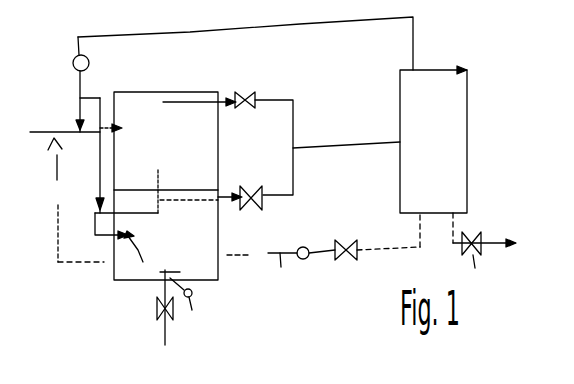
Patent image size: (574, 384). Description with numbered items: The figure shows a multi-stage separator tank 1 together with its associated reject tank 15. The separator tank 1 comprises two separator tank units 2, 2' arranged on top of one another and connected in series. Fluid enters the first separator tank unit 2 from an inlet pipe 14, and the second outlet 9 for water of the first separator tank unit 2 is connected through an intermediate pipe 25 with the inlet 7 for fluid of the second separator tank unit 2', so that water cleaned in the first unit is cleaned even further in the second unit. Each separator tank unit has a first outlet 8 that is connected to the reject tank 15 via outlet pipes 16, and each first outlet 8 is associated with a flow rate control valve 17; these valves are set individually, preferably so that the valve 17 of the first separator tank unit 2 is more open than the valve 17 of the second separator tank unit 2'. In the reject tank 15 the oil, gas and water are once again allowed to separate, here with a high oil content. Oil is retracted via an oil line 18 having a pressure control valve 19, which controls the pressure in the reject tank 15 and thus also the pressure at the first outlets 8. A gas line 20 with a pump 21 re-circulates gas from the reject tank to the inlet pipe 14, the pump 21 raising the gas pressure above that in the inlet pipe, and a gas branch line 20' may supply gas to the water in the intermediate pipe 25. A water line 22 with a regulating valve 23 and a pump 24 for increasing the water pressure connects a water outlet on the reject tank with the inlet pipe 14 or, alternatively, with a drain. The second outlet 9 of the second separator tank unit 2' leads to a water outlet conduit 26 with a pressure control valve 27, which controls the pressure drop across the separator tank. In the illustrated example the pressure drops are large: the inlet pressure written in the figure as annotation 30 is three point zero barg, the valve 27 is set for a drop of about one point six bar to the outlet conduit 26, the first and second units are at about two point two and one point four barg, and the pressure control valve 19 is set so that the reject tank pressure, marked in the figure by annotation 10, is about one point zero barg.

The separator tank 1 is at (113, 302).
The separator tank unit 2 is at (253, 147).
The separator tank unit 2' is at (227, 296).
The inlet for fluid 7 is at (118, 128).
The first outlet 8 is at (173, 102).
The second outlet 9 is at (164, 178).
The connecting line 10 is at (346, 136).
The inlet pipe 14 is at (46, 130).
The reject tank 15 is at (458, 101).
The outlet pipes 16 is at (260, 93).
The flow rate control valve 17 is at (240, 90).
The oil line 18 is at (490, 236).
The pressure control valve 19 is at (484, 260).
The gas line 20 is at (245, 35).
The gas branch line 20' is at (78, 163).
The pump 21 is at (76, 63).
The water line 22 is at (130, 195).
The regulating valve 23 is at (377, 259).
The pump 24 is at (308, 247).
The intermediate pipe 25 is at (92, 227).
The water outlet conduit 26 is at (195, 331).
The pressure control valve 27 is at (162, 303).
The inlet line 30 is at (56, 123).